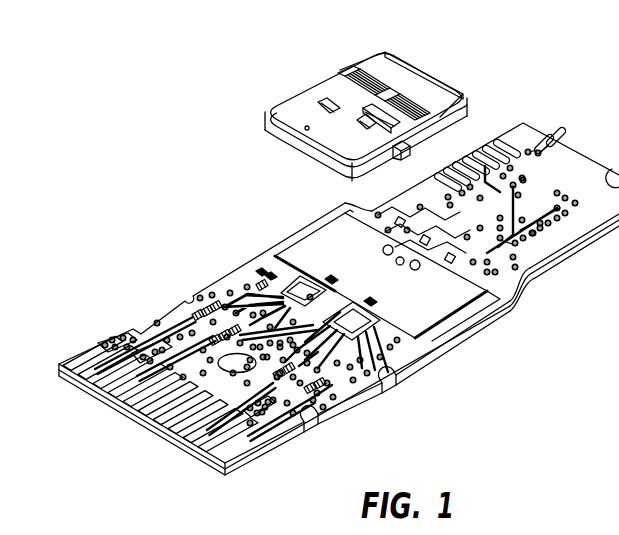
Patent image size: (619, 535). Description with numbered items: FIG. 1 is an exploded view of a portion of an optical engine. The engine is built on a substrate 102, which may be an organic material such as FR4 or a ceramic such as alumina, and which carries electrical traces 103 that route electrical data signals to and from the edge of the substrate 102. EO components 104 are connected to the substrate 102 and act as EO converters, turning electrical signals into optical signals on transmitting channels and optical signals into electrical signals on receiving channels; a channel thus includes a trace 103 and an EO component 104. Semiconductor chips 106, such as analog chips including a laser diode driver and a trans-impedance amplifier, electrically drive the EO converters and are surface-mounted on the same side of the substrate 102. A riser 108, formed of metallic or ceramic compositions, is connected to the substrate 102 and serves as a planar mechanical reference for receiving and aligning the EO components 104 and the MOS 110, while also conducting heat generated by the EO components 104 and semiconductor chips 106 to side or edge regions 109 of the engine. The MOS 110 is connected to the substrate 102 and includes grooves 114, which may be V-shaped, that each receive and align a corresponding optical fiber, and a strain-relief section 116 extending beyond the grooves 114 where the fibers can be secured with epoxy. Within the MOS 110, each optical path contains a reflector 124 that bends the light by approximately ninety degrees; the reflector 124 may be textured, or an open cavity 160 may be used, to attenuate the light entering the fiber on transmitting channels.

The substrate 102 is at (332, 404).
The trace 103 is at (148, 337).
The EO components 104 is at (331, 281).
The semiconductor chips 106 is at (277, 269).
The riser 108 is at (517, 289).
The side or edge regions 109 is at (290, 240).
The MOS 110 is at (262, 123).
The grooves 114 is at (360, 84).
The strain-relief section 116 is at (397, 66).
The reflector 124 is at (323, 101).
The open cavity 160 is at (392, 128).